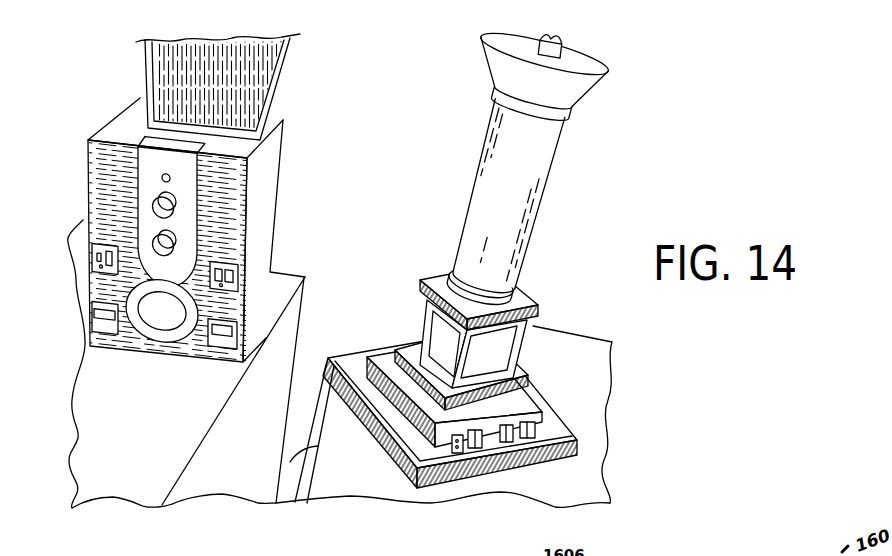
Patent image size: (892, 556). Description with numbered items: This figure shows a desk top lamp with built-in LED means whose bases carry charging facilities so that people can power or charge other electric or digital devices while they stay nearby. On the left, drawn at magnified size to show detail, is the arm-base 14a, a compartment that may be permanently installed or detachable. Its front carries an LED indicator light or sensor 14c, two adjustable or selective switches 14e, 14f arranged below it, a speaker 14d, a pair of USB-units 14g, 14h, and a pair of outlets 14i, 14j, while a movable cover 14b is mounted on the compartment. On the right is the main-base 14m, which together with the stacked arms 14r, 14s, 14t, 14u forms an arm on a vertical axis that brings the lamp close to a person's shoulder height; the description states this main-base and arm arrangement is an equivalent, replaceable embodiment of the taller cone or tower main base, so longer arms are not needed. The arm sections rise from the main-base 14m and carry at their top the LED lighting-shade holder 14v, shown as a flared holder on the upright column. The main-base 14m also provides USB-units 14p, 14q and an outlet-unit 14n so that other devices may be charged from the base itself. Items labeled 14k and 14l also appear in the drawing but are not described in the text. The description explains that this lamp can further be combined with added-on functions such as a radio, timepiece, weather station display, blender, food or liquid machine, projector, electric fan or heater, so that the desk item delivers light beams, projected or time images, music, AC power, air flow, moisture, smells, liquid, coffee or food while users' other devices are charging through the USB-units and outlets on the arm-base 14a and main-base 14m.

The arm-base 14a is at (283, 282).
The movable cover 14b is at (123, 352).
The LED indicator light 14c is at (163, 175).
The speaker 14d is at (167, 343).
The adjustable or selective switch 14e is at (166, 247).
The adjustable or selective switch 14f is at (166, 209).
The USB-unit 14g is at (222, 342).
The USB-unit 14h is at (103, 328).
The outlet-unit 14i is at (232, 282).
The outlet-unit 14j is at (88, 236).
The floor surface 14k is at (377, 484).
The ramp 14l is at (273, 503).
The main-base 14m is at (318, 490).
The outlet-unit 14n is at (462, 453).
The USB-unit 14p is at (504, 444).
The USB-unit 14q is at (560, 444).
The arm 14r is at (421, 285).
The arm 14s is at (496, 347).
The arm 14t is at (440, 346).
The arm 14u is at (510, 276).
The top LED lighting-shade holder 14v is at (503, 84).